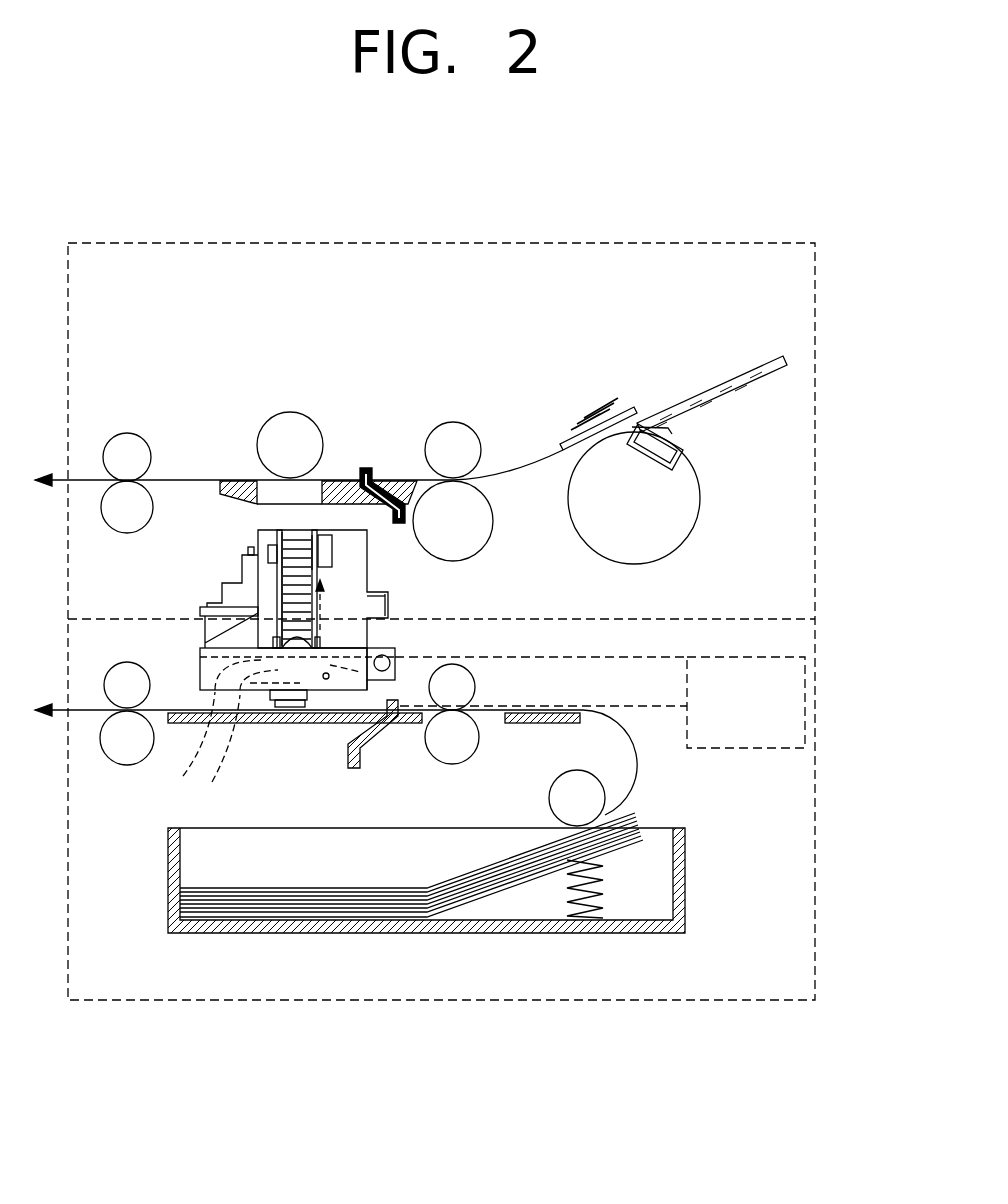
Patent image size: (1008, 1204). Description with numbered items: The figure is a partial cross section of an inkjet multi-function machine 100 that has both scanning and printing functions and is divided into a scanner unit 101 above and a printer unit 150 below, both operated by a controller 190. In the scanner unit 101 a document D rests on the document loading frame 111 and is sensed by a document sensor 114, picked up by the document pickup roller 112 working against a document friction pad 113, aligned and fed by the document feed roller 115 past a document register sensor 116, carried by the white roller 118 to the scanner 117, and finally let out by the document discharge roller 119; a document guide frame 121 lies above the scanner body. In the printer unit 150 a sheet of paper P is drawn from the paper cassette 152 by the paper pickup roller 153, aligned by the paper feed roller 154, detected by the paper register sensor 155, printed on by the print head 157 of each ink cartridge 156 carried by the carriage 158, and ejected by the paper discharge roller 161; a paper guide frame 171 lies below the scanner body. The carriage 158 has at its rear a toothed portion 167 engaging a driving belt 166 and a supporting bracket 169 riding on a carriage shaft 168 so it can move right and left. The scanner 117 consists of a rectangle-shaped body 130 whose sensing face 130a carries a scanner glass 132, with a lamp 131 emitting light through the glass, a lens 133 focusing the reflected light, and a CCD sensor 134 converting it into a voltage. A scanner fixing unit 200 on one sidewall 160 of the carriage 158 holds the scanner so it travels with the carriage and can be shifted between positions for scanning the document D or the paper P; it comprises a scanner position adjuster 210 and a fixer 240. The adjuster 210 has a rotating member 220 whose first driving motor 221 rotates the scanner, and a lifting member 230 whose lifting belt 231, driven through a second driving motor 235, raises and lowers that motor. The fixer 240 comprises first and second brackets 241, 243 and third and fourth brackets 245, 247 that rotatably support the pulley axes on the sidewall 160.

The inkjet multi-function machine 100 is at (211, 204).
The scanner unit 101 is at (818, 466).
The printer unit 150 is at (818, 733).
The scanner fixing unit 200 is at (352, 303).
The scanner position adjuster 210 is at (380, 347).
The rotating member 220 is at (297, 628).
The lifting member 230 is at (291, 513).
The fixer 240 is at (268, 513).
The carriage 158 is at (378, 570).
The lifting belt 231 is at (272, 548).
The first bracket 241 is at (265, 560).
The second bracket 243 is at (333, 553).
The ink cartridge 156 is at (225, 586).
The third bracket 245 is at (203, 612).
The sidewall 160 is at (205, 619).
The fourth bracket 247 is at (322, 645).
The first driving motor 221 is at (293, 650).
The driving belt 166 is at (392, 606).
The toothed portion 167 is at (392, 596).
The charge-coupled device (CCD) sensor 134 is at (198, 652).
The rectangle-shaped body 130 is at (200, 683).
The lens 133 is at (178, 743).
The scanner glass 132 is at (210, 752).
The carriage shaft 168 is at (397, 690).
The supporting bracket 169 is at (396, 657).
The sensing face 130a is at (397, 677).
The lamp 131 is at (326, 680).
The paper guide frame 171 is at (276, 708).
The print head 157 is at (306, 708).
The paper register sensor 155 is at (356, 769).
The scanner 117 is at (373, 738).
The paper feed roller 154 is at (452, 765).
The paper pickup roller 153 is at (550, 800).
The paper cassette 152 is at (408, 933).
The sheet of paper P is at (200, 888).
The controller 190 is at (740, 749).
The document discharge roller 119 is at (108, 530).
The paper discharge roller 161 is at (114, 762).
The white roller 118 is at (263, 443).
The document guide frame 121 is at (222, 482).
The document register sensor 116 is at (373, 468).
The document feed roller 115 is at (494, 523).
The second driving motor 235 is at (412, 498).
The document pickup roller 112 is at (655, 564).
The document friction pad 113 is at (565, 443).
The document sensor 114 is at (686, 449).
The document loading frame 111 is at (748, 386).
The document D is at (710, 383).